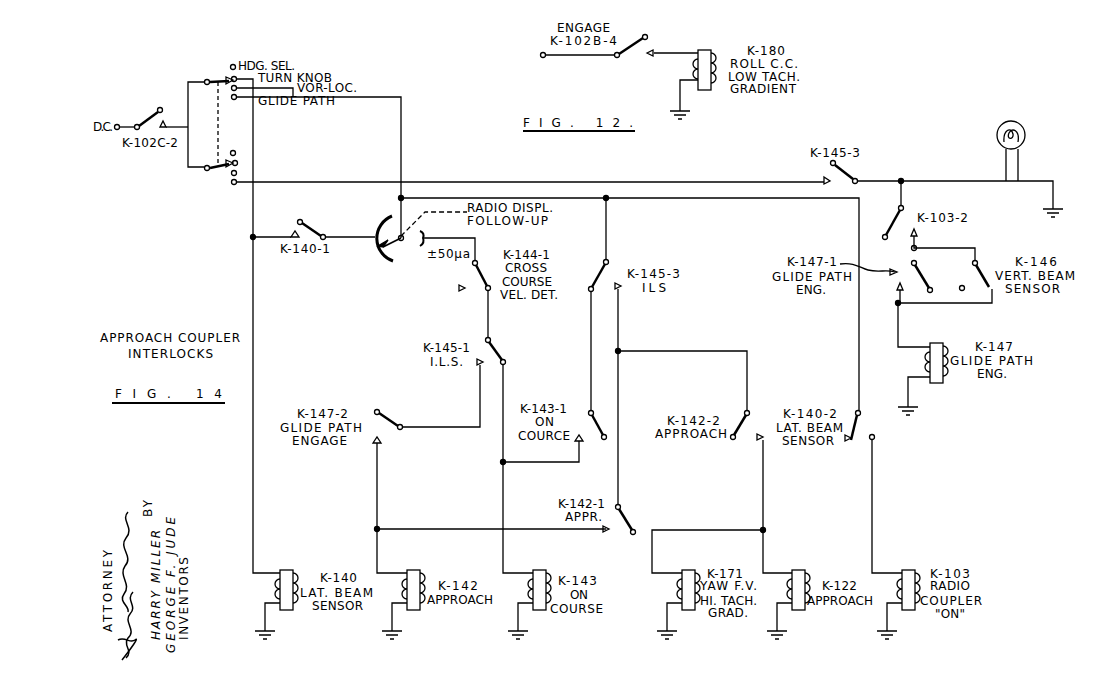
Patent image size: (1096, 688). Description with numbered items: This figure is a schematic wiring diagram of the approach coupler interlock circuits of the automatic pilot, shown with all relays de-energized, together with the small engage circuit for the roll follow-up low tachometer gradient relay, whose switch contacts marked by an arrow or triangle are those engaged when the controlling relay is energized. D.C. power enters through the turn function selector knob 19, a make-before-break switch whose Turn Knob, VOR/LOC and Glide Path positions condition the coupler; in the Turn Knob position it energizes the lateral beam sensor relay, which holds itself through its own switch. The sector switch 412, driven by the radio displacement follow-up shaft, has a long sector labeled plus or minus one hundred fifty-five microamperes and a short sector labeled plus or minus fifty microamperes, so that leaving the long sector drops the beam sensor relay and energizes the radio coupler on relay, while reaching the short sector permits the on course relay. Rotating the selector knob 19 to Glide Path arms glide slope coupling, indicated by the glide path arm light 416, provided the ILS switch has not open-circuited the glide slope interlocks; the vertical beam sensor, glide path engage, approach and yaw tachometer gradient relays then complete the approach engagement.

The turn function selector knob 19 is at (217, 108).
The sector switch 412 is at (381, 245).
The glide path arm light 416 is at (1026, 132).